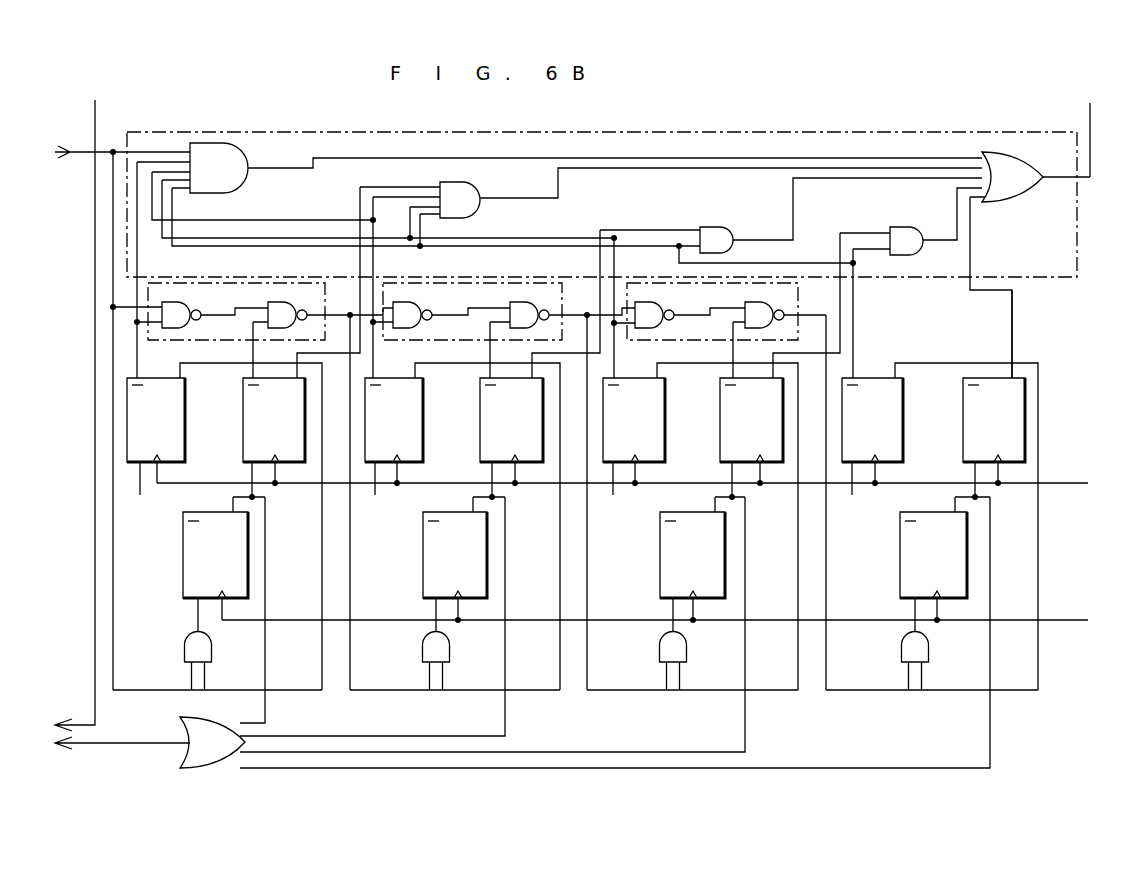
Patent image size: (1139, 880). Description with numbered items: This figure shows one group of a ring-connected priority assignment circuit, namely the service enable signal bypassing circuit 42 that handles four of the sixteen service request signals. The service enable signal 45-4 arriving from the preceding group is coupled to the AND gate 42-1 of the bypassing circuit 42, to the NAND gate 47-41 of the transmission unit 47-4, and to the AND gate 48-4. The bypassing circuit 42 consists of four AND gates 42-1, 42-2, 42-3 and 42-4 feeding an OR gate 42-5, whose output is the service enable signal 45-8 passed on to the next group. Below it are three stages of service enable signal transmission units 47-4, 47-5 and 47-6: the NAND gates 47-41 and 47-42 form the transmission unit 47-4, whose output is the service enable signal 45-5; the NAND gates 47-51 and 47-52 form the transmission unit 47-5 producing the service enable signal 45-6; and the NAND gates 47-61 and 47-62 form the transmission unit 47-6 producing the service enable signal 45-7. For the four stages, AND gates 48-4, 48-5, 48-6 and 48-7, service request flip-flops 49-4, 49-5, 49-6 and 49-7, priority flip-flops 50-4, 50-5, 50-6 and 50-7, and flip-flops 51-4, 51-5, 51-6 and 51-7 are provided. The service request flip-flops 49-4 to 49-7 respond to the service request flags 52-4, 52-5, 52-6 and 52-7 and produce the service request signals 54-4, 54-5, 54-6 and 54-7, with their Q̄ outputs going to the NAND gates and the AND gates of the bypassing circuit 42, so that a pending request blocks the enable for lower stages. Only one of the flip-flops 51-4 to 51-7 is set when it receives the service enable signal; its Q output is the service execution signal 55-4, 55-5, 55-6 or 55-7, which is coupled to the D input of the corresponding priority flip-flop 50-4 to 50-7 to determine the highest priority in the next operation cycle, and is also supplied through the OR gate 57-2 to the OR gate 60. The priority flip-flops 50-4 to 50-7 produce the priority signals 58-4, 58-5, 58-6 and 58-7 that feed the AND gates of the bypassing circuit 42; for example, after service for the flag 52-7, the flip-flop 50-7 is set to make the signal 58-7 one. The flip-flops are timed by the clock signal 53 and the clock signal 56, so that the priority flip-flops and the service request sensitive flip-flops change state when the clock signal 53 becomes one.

The service enable signal bypassing circuit 42 is at (1007, 132).
The AND gate 42-1 is at (235, 162).
The AND gate 42-2 is at (476, 192).
The AND gate 42-3 is at (718, 227).
The AND gate 42-4 is at (903, 227).
The OR gate 42-5 is at (1017, 206).
The service enable signal 45-4 is at (109, 407).
The service enable signal 45-5 is at (335, 312).
The service enable signal 45-6 is at (573, 312).
The service enable signal 45-7 is at (815, 318).
The service enable signal 45-8 is at (1103, 152).
The service enable signal transmission unit 47-4 is at (236, 312).
The NAND gate 47-41 is at (180, 302).
The NAND gate 47-42 is at (278, 302).
The service enable signal transmission unit 47-5 is at (472, 312).
The NAND gate 47-51 is at (414, 302).
The NAND gate 47-52 is at (520, 302).
The service enable signal transmission unit 47-6 is at (712, 312).
The NAND gate 47-61 is at (654, 302).
The NAND gate 47-62 is at (771, 302).
The AND gate 48-4 is at (187, 645).
The AND gate 48-5 is at (425, 645).
The AND gate 48-6 is at (662, 645).
The AND gate 48-7 is at (904, 645).
The service request flip-flop 49-4 is at (174, 413).
The service request flip-flop 49-5 is at (412, 413).
The service request flip-flop 49-6 is at (650, 413).
The service request flip-flop 49-7 is at (890, 413).
The priority flip-flop 50-4 is at (260, 436).
The priority flip-flop 50-5 is at (498, 436).
The priority flip-flop 50-6 is at (738, 436).
The priority flip-flop 50-7 is at (980, 436).
The flip-flop 51-4 is at (202, 559).
The flip-flop 51-5 is at (438, 559).
The flip-flop 51-6 is at (675, 559).
The flip-flop 51-7 is at (913, 559).
The service request flag 52-4 is at (139, 489).
The service request flag 52-5 is at (376, 489).
The service request flag 52-6 is at (614, 489).
The service request flag 52-7 is at (854, 489).
The clock signal 53 is at (622, 471).
The service request signal 54-4 is at (251, 515).
The service request signal 54-5 is at (487, 515).
The service request signal 54-6 is at (726, 515).
The service request signal 54-7 is at (966, 515).
The service execution signal 55-4 is at (274, 592).
The service execution signal 55-5 is at (397, 599).
The service execution signal 55-6 is at (516, 607).
The service execution signal 55-7 is at (636, 615).
The clock signal 56 is at (655, 608).
The OR gate 57-2 is at (190, 732).
The priority signal 58-4 is at (339, 346).
The priority signal 58-5 is at (577, 346).
The priority signal 58-6 is at (814, 346).
The priority signal 58-7 is at (1036, 334).
The OR gate 60 is at (122, 436).